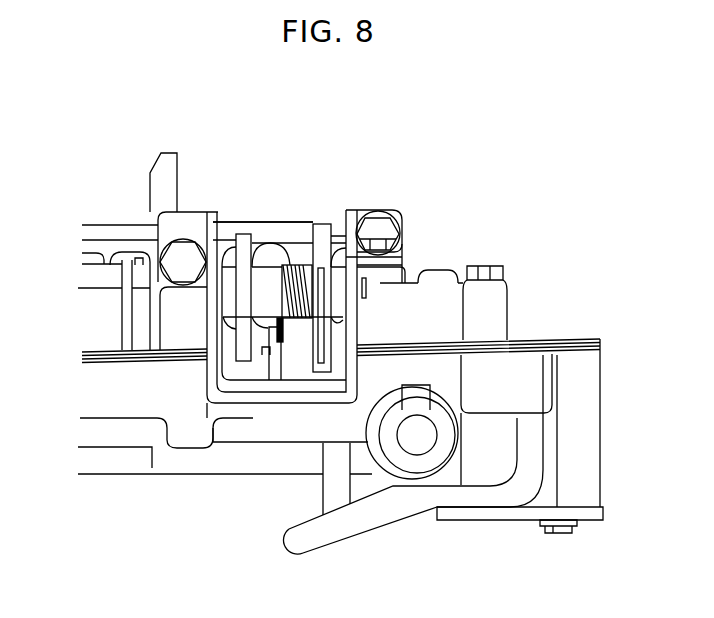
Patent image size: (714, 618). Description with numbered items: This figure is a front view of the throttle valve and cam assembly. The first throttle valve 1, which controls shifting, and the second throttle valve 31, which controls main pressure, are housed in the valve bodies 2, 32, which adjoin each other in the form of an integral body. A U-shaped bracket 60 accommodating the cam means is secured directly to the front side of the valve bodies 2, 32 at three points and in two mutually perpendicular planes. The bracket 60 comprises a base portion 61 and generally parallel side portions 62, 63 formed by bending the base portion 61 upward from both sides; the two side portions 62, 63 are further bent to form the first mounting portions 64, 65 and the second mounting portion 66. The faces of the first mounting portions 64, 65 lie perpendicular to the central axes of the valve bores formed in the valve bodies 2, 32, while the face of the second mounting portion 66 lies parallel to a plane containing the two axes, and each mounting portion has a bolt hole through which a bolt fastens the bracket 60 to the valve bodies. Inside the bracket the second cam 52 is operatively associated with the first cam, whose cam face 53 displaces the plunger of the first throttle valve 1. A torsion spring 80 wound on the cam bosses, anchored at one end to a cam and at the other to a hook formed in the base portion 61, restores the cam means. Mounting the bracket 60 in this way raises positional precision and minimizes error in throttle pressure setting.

The first throttle valve 1 is at (345, 185).
The valve body 2 is at (263, 163).
The valve body 32 is at (250, 218).
The second throttle valve 31 is at (208, 148).
The second cam 52 is at (241, 233).
The cam face 53 is at (320, 224).
The bracket 60 is at (372, 372).
The base portion 61 is at (283, 388).
The side portion 62 is at (352, 331).
The side portion 63 is at (216, 338).
The first mounting portion 64 is at (360, 212).
The first mounting portion 65 is at (192, 220).
The second mounting portion 66 is at (402, 260).
The torsion spring 80 is at (289, 255).